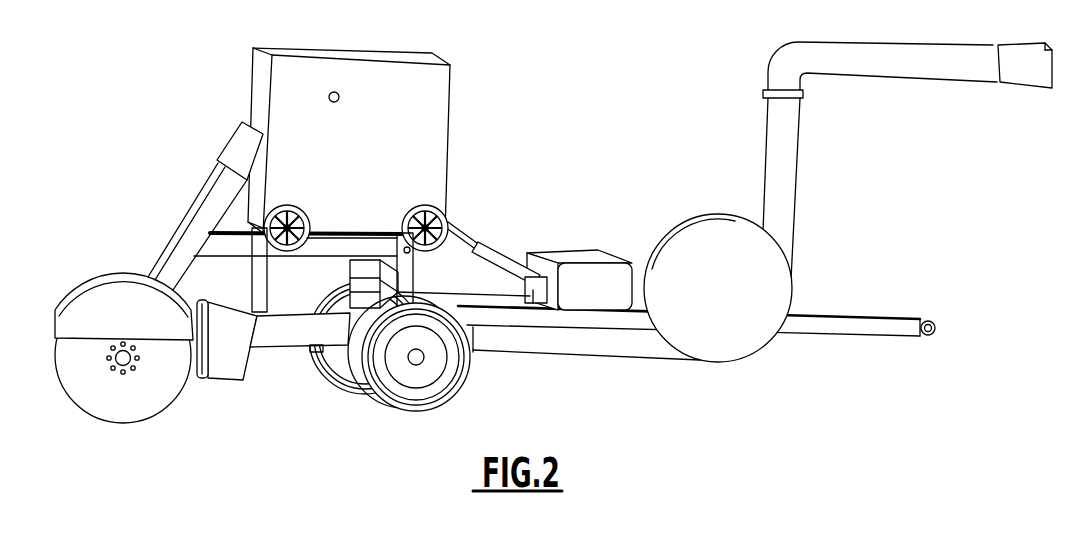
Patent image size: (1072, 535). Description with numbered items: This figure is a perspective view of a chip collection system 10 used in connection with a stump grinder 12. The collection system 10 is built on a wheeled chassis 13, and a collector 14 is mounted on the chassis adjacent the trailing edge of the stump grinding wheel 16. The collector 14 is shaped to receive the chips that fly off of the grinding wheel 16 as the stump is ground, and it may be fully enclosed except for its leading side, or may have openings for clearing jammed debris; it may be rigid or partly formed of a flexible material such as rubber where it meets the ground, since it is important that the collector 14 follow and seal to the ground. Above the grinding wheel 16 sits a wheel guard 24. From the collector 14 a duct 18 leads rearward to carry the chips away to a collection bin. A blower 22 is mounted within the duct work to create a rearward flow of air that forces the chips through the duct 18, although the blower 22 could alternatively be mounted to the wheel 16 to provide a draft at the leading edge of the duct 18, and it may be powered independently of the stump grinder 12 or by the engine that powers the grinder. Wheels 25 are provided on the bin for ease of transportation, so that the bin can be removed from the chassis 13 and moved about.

The chip collection system 10 is at (158, 112).
The stump grinder 12 is at (375, 75).
The wheeled chassis 13 is at (508, 346).
The collector 14 is at (207, 380).
The stump grinding wheel 16 is at (110, 407).
The duct 18 is at (635, 348).
The blower 22 is at (697, 242).
The wheel guard 24 is at (103, 295).
The wheels 25 is at (447, 224).